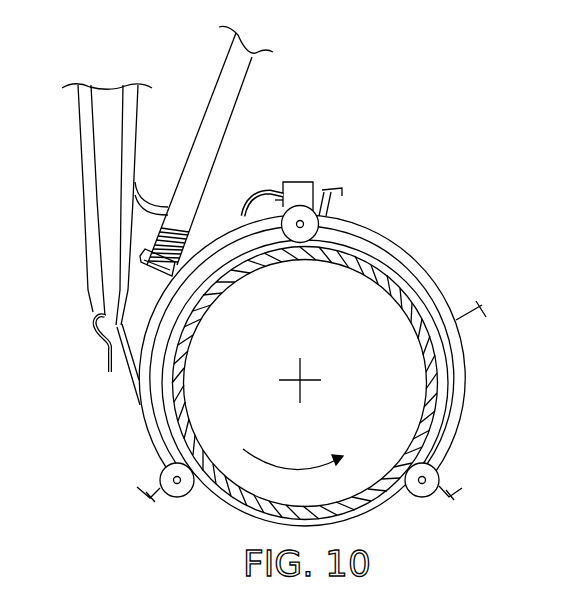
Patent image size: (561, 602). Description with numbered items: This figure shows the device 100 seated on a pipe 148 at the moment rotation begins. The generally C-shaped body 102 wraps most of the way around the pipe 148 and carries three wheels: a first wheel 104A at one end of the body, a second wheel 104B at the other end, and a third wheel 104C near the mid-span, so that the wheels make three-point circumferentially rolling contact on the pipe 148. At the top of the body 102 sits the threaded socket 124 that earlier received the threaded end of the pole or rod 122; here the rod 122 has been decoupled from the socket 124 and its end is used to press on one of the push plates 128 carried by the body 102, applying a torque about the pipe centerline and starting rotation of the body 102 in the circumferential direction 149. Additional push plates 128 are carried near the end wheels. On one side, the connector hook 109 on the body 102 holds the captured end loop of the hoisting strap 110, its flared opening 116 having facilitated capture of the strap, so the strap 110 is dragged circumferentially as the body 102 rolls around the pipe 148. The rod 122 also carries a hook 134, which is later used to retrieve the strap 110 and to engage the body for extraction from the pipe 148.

The device 100 is at (413, 228).
The C-shaped body 102 is at (464, 380).
The first wheel 104A is at (416, 476).
The second wheel 104B is at (182, 476).
The third wheel 104C is at (298, 242).
The hook 109 is at (107, 360).
The hoisting strap 110 is at (82, 150).
The flared opening 116 is at (121, 372).
The pole or rod 122 is at (236, 89).
The threaded socket 124 is at (318, 189).
The push plate 128 is at (482, 306).
The hook 134 is at (162, 210).
The pipe 148 is at (363, 508).
The circumferential direction 149 is at (278, 463).